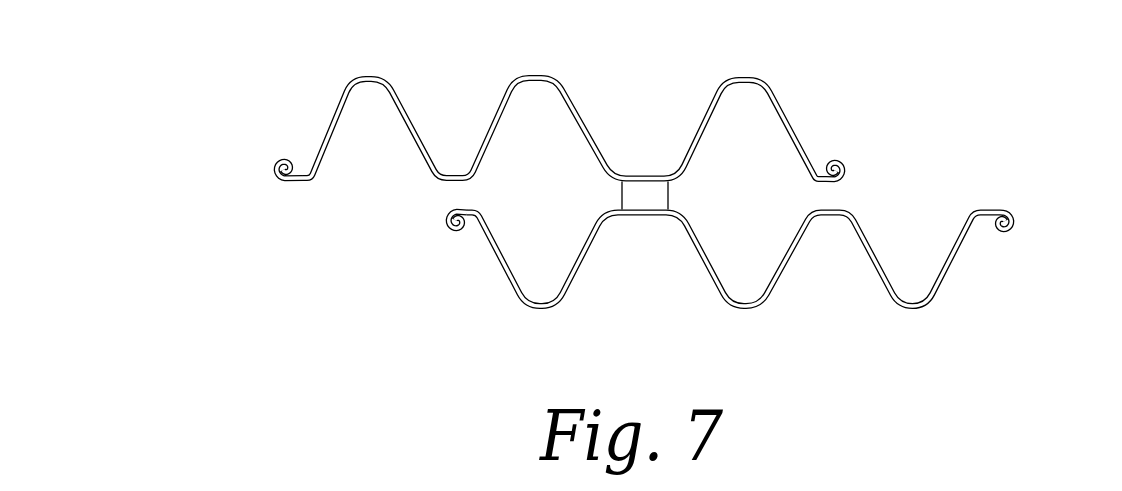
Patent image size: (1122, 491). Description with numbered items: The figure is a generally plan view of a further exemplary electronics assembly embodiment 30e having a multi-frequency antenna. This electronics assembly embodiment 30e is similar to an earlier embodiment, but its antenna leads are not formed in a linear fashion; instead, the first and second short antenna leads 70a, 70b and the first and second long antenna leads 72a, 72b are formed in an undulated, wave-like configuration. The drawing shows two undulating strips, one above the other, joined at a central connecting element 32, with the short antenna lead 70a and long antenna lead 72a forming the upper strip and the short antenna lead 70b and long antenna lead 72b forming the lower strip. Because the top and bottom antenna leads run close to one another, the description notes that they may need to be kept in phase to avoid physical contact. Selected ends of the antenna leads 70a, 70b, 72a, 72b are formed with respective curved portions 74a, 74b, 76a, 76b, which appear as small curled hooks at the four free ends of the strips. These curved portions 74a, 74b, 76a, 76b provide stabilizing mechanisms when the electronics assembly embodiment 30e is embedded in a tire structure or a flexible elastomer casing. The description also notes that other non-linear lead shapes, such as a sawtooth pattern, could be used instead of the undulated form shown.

The electronics assembly embodiment 30e is at (960, 102).
The connector 32 is at (669, 190).
The first short antenna lead 70a is at (746, 78).
The second short antenna lead 70b is at (521, 303).
The first long antenna lead 72a is at (403, 84).
The second long antenna lead 72b is at (931, 305).
The curved portion 74a is at (833, 159).
The curved portion 74b is at (455, 228).
The curved portion 76a is at (289, 160).
The curved portion 76b is at (1007, 232).